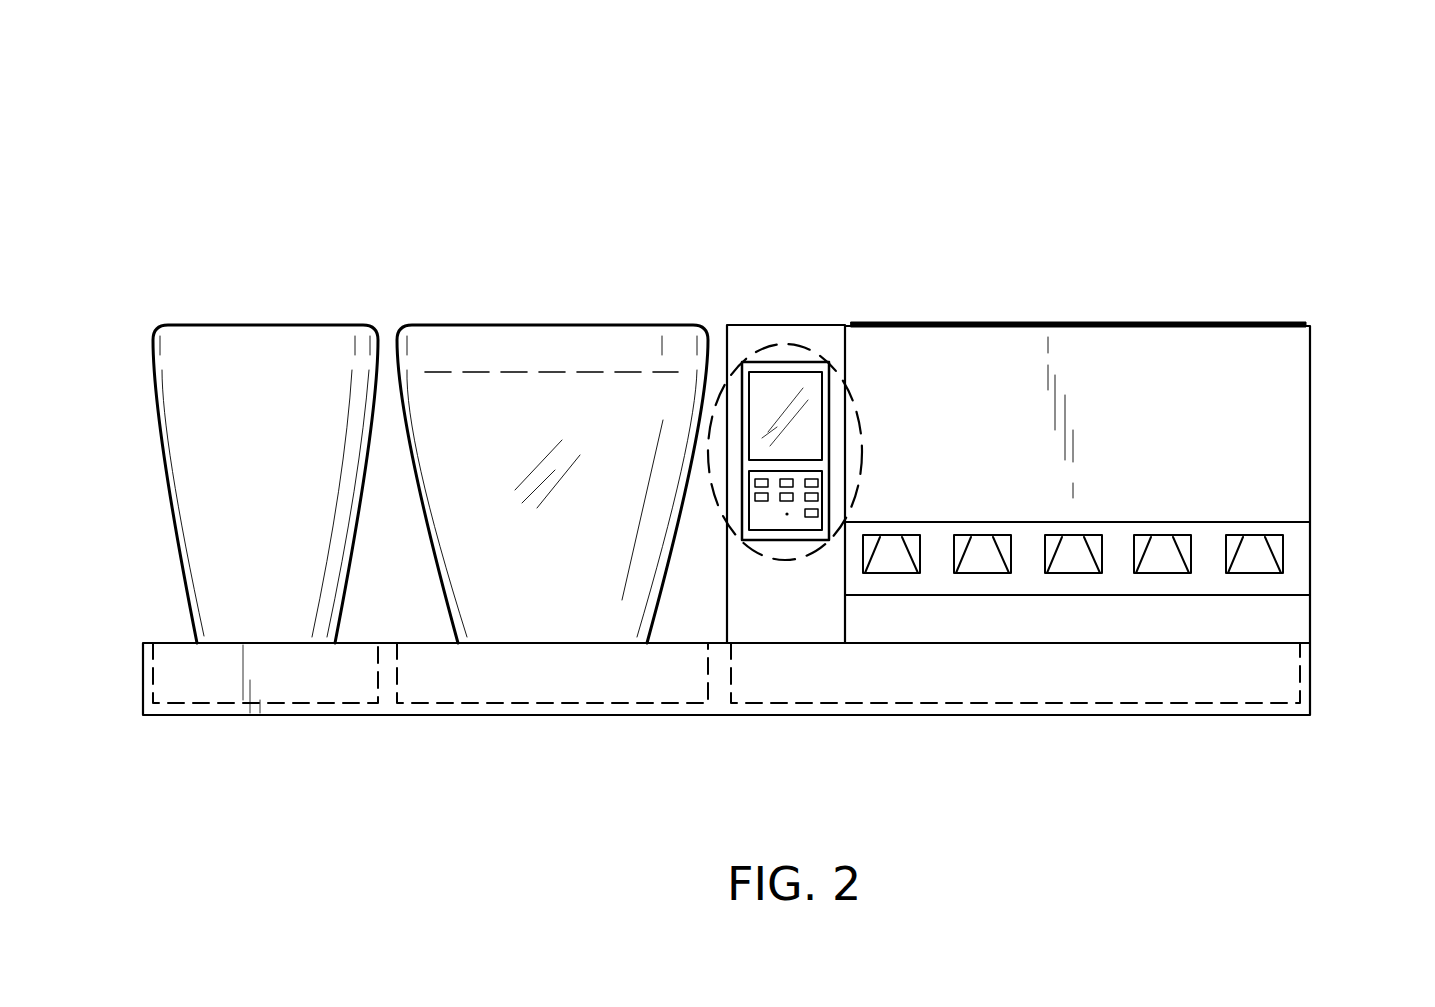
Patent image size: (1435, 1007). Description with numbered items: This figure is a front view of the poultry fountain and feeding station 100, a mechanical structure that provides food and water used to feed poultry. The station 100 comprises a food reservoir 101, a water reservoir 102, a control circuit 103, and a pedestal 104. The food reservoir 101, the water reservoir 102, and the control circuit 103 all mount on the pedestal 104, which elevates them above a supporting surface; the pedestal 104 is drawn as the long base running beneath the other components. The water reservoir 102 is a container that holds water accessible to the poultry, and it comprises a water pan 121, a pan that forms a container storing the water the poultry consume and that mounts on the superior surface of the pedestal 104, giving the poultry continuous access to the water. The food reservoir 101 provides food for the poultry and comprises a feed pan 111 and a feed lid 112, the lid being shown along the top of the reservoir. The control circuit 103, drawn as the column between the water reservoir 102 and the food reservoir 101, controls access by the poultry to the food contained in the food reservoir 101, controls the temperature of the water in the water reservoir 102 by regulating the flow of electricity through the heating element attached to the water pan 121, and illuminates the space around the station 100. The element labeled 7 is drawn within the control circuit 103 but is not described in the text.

The poultry fountain and feeding station 100 is at (235, 186).
The food reservoir 101 is at (1311, 391).
The water reservoir 102 is at (617, 345).
The control circuit 103 is at (765, 325).
The pedestal 104 is at (1132, 716).
The control device / user interface 7 is at (786, 340).
The feed pan 111 is at (1213, 368).
The feed lid 112 is at (1113, 322).
The water pan 121 is at (550, 372).